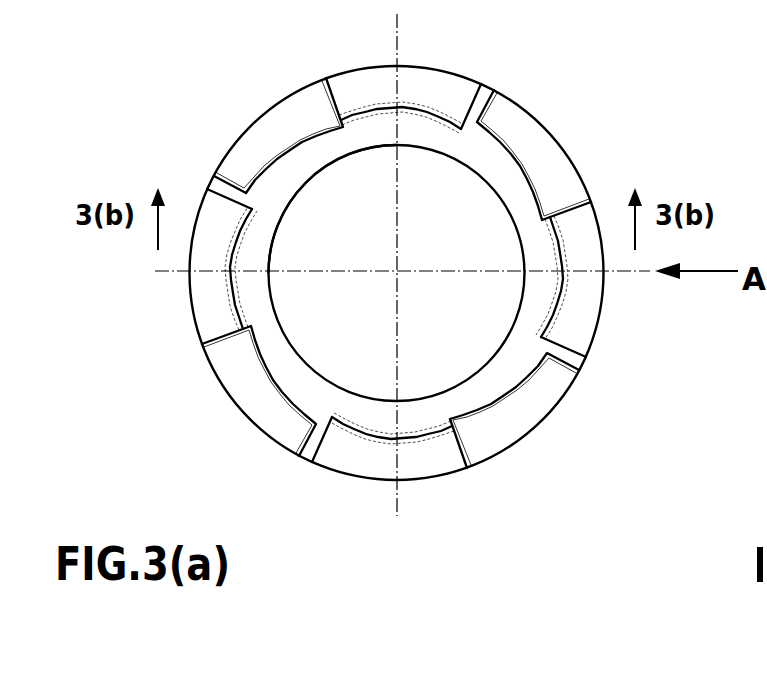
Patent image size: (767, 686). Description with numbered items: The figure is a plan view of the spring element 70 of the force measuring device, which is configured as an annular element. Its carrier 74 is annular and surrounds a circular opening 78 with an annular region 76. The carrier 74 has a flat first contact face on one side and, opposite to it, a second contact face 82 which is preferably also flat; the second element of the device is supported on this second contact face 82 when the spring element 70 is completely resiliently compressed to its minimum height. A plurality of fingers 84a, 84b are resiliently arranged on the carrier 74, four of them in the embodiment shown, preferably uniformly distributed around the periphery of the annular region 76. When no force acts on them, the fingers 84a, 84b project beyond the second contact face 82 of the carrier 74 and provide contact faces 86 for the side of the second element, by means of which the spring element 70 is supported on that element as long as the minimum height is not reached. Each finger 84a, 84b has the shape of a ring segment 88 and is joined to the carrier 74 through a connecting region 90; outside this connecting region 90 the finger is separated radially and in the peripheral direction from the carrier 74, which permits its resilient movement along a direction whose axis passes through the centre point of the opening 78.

The spring element 70 is at (646, 356).
The carrier 74 is at (415, 415).
The annular region 76 is at (413, 128).
The opening 78 is at (464, 240).
The second contact face 82 is at (260, 251).
The finger 84a is at (273, 122).
The finger 84b is at (550, 165).
The contact face 86 is at (501, 114).
The ring segment 88 is at (550, 385).
The connecting region 90 is at (470, 443).